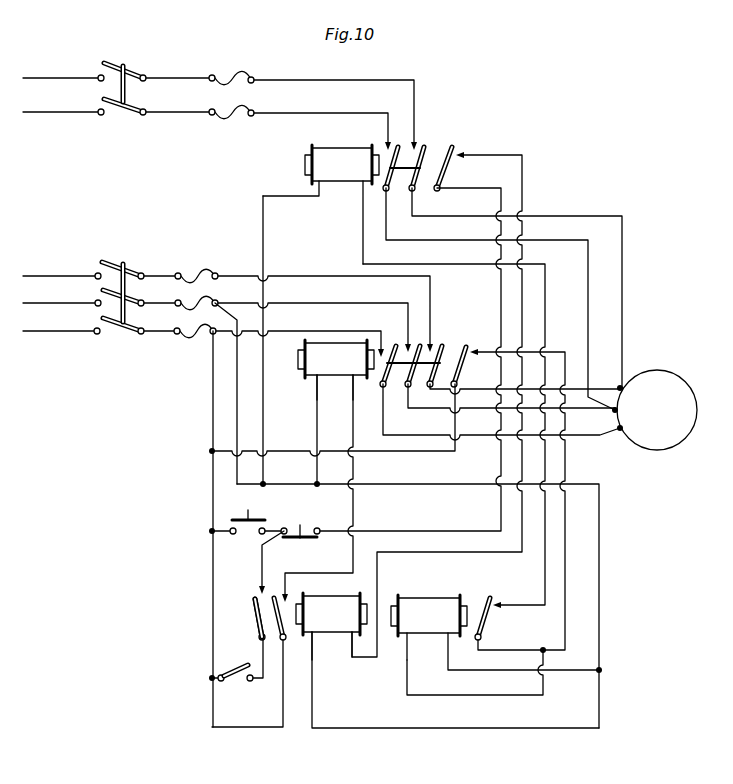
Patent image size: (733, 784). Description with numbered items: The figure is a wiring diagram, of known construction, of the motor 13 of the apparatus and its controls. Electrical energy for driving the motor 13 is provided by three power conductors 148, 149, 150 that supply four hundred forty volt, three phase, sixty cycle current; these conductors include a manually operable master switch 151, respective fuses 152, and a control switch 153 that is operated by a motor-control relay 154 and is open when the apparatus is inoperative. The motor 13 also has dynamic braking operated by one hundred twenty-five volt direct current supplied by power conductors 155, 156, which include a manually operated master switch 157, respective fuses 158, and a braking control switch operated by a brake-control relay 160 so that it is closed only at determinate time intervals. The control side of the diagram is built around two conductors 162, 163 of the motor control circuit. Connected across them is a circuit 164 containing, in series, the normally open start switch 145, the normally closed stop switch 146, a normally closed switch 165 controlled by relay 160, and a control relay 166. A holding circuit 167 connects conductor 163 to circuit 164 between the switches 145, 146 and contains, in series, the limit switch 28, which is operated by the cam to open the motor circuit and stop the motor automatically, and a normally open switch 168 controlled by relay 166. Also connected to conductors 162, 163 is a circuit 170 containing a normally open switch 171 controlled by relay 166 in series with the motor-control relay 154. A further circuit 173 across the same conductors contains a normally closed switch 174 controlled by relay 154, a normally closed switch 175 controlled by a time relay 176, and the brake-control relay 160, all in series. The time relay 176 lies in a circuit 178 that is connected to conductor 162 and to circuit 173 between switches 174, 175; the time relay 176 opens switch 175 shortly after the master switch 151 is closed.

The motor 13 is at (673, 374).
The limit switch 28 is at (241, 661).
The start switch 145 is at (251, 533).
The stop switch 146 is at (300, 539).
The power conductor 148 is at (65, 272).
The power conductor 149 is at (65, 300).
The power conductor 150 is at (65, 328).
The master switch 151 is at (124, 261).
The fuses 152 is at (214, 282).
The control switch 153 is at (442, 342).
The motor-control relay 154 is at (336, 370).
The power conductor 155 is at (62, 76).
The power conductor 156 is at (62, 110).
The master switch 157 is at (129, 71).
The fuses 158 is at (243, 99).
The brake-control relay 160 is at (321, 204).
The conductor 162 is at (272, 488).
The conductor 163 is at (211, 424).
The circuit 164 is at (435, 532).
The normally closed switch 165 is at (454, 143).
The control relay 166 is at (331, 626).
The holding circuit 167 is at (262, 574).
The normally open switch 168 is at (255, 612).
The circuit 170 is at (315, 428).
The normally open switch 171 is at (261, 618).
The circuit 173 is at (263, 405).
The normally closed switch 174 is at (460, 365).
The normally closed switch 175 is at (488, 598).
The time relay 176 is at (496, 634).
The circuit 178 is at (497, 696).